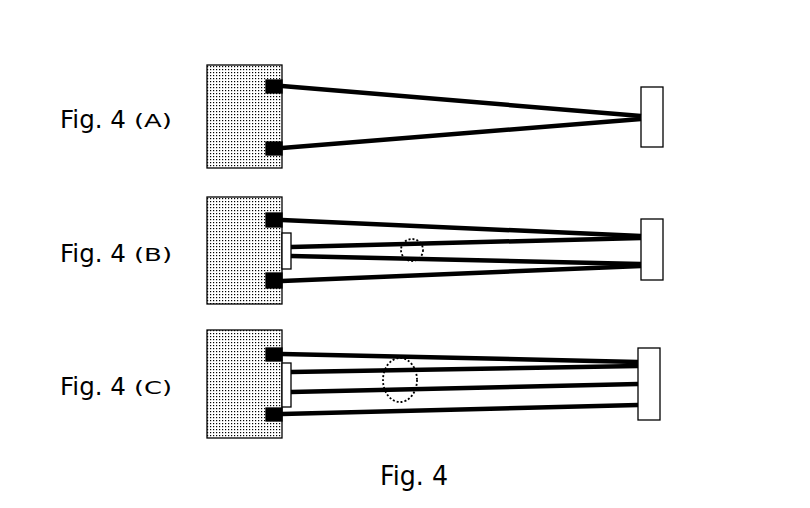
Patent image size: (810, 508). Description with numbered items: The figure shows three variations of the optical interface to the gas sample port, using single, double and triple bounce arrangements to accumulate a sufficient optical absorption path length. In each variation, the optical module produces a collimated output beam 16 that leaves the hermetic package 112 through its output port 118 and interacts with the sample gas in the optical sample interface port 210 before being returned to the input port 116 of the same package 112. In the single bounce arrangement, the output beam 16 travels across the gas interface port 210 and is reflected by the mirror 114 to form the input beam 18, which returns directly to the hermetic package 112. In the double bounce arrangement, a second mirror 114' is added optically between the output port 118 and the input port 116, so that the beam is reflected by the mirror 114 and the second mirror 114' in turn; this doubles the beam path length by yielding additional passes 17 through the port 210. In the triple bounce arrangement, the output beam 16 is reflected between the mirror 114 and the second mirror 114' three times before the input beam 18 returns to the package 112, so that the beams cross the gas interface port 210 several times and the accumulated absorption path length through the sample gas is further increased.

In FIG. 4A, the hermetic package 112 is at (208, 64).
In FIG. 4B, the hermetic package 112 is at (208, 196).
In FIG. 4C, the hermetic package 112 is at (208, 329).
In FIG. 4A, the input port 116 is at (266, 142).
In FIG. 4B, the input port 116 is at (266, 275).
In FIG. 4C, the input port 116 is at (266, 409).
In FIG. 4A, the output port 118 is at (272, 80).
In FIG. 4B, the output port 118 is at (282, 214).
In FIG. 4C, the output port 118 is at (282, 349).
In FIG. 4A, the mirror 114 is at (628, 83).
In FIG. 4B, the mirror 114 is at (629, 231).
In FIG. 4C, the mirror 114 is at (631, 364).
In FIG. 4B, the second mirror 114' is at (335, 234).
In FIG. 4C, the second mirror 114' is at (335, 366).
In FIG. 4A, the output beam 16 is at (455, 98).
In FIG. 4B, the output beam 16 is at (403, 222).
In FIG. 4C, the output beam 16 is at (393, 350).
In FIG. 4A, the input beam 18 is at (540, 127).
In FIG. 4B, the input beam 18 is at (435, 273).
In FIG. 4C, the input beam 18 is at (437, 408).
In FIG. 4B, the passes 17 is at (417, 238).
In FIG. 4C, the passes 17 is at (413, 358).
In FIG. 4A, the optical sample interface port 210 is at (522, 79).
In FIG. 4B, the optical sample interface port 210 is at (497, 212).
In FIG. 4C, the optical sample interface port 210 is at (514, 345).